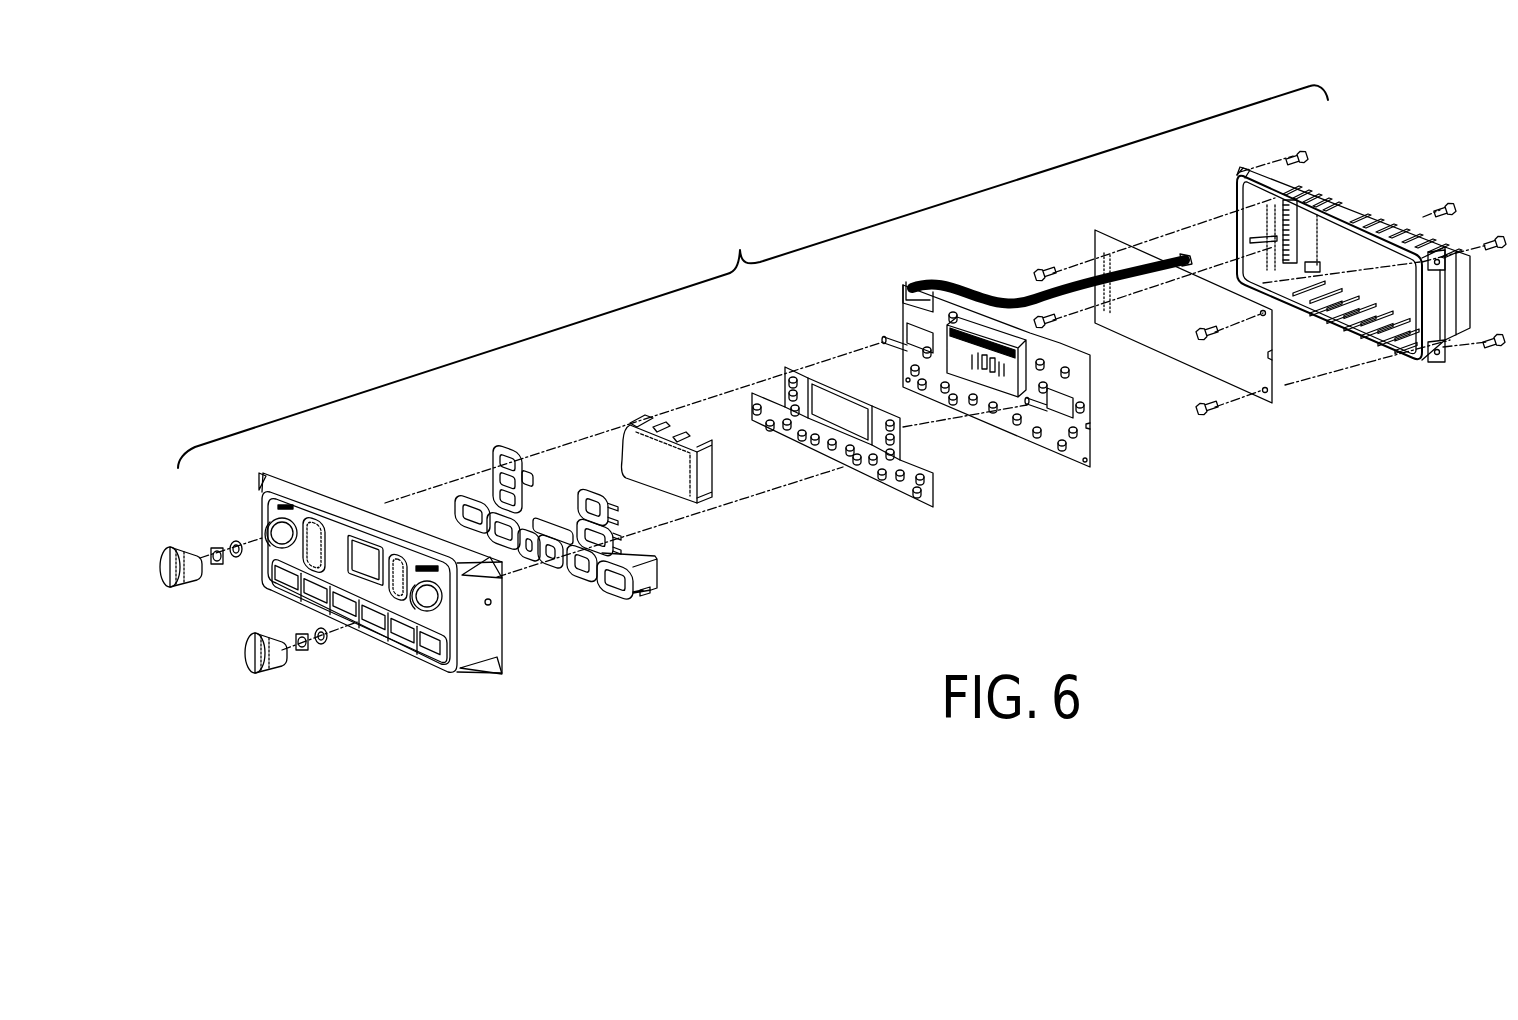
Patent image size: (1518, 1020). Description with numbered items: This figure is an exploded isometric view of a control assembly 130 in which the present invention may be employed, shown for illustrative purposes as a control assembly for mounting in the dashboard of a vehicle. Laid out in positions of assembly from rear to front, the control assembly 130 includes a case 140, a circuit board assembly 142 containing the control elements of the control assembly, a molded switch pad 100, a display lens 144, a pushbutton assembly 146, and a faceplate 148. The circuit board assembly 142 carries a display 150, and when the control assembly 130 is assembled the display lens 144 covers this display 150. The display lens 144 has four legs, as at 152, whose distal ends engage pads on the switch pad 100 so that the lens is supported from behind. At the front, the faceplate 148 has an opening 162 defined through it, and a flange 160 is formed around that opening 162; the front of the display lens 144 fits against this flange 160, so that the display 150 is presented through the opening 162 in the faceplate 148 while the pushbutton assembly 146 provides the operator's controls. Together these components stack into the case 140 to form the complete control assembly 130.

The switch pad 100 is at (928, 488).
The control assembly 130 is at (758, 242).
The case 140 is at (1337, 210).
The circuit board assembly 142 is at (1298, 407).
The display lens 144 is at (670, 478).
The pushbutton assembly 146 is at (640, 593).
The faceplate 148 is at (472, 622).
The display 150 is at (993, 385).
The legs of the display lens 152 is at (647, 417).
The flange 160 is at (325, 543).
The opening 162 is at (367, 555).